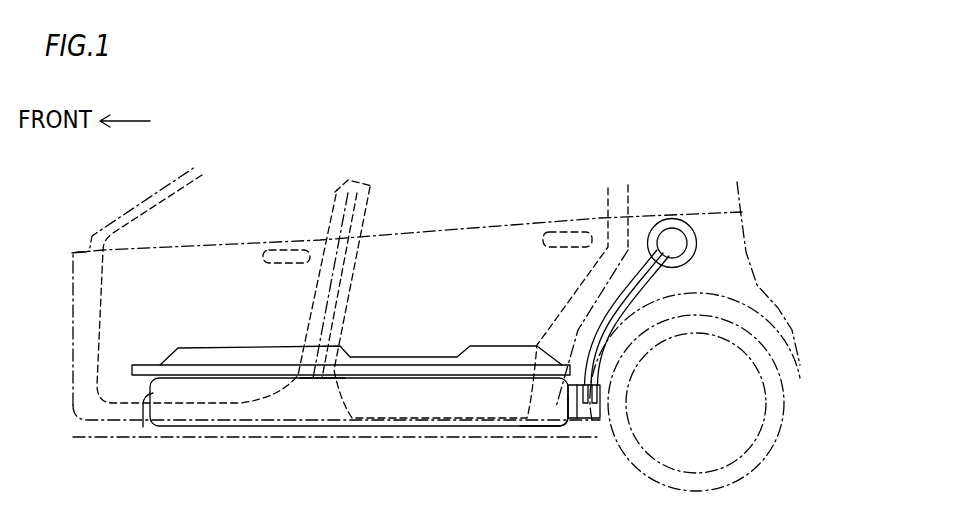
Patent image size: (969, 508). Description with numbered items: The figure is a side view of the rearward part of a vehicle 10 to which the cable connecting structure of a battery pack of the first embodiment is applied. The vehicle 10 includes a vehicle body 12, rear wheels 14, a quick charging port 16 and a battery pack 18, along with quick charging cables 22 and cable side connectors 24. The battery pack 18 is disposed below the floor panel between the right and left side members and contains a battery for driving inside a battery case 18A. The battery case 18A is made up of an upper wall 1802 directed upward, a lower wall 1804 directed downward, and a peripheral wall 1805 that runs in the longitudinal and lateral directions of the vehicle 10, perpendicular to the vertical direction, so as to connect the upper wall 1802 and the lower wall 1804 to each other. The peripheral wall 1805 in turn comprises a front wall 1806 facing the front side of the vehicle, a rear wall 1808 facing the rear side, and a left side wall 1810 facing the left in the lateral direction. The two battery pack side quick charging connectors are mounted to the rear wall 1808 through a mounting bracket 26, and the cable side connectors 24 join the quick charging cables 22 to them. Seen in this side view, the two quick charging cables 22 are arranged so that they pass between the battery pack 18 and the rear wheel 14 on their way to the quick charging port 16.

The vehicle 10 is at (336, 94).
The vehicle body 12 is at (757, 221).
The rear wheels 14 is at (772, 465).
The quick charging port 16 is at (685, 229).
The battery pack 18 is at (397, 347).
The battery case 18A is at (351, 370).
The quick charging cables 22 is at (592, 328).
The cable side connectors 24 is at (598, 420).
The mounting bracket 26 is at (572, 385).
The upper wall 1802 is at (240, 346).
The lower wall 1804 is at (260, 427).
The peripheral wall 1805 is at (567, 433).
The front wall 1806 is at (143, 427).
The rear wall 1808 is at (563, 410).
The left side wall 1810 is at (325, 405).